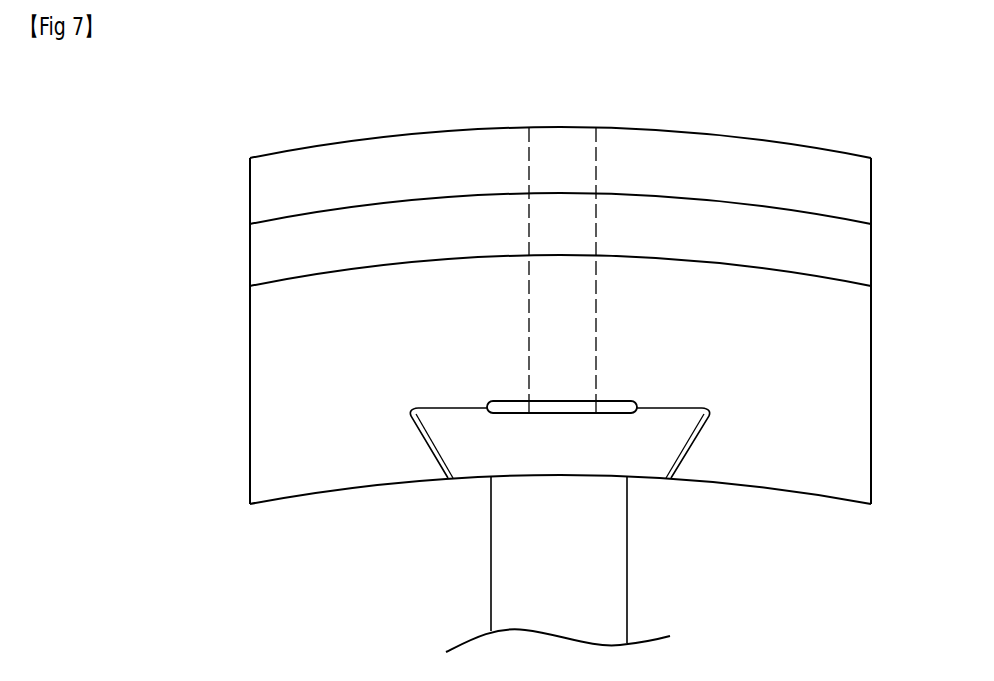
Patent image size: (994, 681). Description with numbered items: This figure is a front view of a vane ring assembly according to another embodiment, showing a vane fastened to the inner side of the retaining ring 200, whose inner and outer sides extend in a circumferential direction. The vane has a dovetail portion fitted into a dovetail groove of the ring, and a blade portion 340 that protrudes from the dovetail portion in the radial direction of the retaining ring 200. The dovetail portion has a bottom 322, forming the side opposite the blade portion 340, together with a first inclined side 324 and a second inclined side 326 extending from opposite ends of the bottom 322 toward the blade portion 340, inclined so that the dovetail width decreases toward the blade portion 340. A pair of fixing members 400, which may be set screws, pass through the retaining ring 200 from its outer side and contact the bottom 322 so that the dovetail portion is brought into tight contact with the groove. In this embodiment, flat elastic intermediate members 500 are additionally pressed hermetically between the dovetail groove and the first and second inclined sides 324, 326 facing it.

The retaining ring 200 is at (293, 325).
The fixing members 400 is at (596, 325).
The elastic intermediate members 500 is at (708, 432).
The bottom 322 is at (450, 406).
The first inclined side 324 is at (432, 453).
The second inclined side 326 is at (690, 452).
The blade portion 340 is at (607, 571).